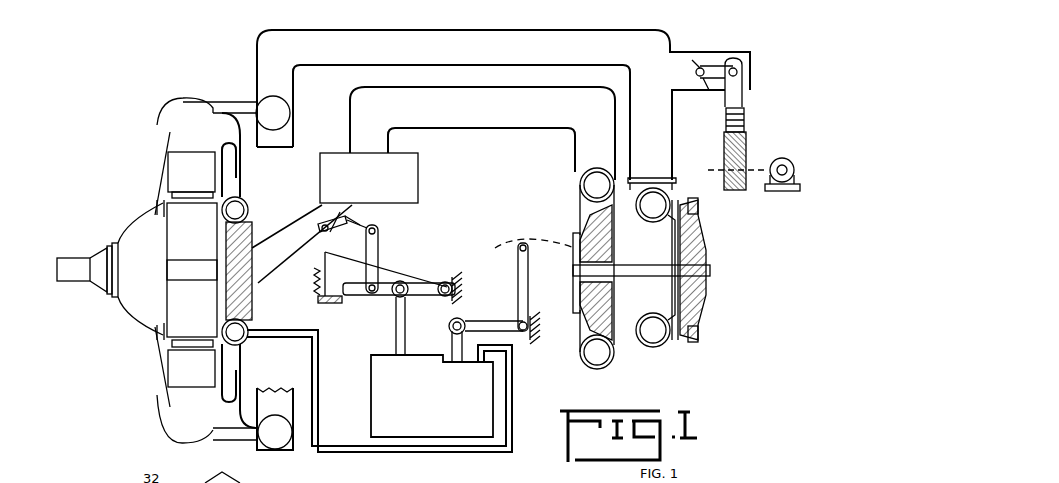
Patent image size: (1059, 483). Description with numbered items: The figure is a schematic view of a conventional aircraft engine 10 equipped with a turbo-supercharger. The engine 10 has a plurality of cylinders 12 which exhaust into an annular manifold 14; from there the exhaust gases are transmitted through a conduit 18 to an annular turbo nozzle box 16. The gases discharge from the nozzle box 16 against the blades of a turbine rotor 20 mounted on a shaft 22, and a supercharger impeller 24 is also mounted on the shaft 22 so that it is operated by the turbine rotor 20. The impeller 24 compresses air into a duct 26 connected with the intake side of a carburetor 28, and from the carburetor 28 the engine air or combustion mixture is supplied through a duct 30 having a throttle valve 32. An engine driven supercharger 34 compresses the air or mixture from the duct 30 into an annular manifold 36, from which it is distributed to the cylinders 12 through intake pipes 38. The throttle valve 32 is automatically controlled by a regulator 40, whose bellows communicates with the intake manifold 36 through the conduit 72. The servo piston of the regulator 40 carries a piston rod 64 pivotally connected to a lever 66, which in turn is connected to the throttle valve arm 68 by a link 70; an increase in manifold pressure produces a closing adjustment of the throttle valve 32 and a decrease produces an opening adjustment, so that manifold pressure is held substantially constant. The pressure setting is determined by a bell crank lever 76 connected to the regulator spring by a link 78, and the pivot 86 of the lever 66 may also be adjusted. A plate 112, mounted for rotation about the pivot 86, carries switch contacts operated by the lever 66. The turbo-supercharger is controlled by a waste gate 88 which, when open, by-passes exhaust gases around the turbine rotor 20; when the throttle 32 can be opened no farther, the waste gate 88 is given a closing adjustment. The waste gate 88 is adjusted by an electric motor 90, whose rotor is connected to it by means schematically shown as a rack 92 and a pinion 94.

The aircraft engine 10 is at (129, 319).
The cylinders 12 is at (178, 168).
The annular manifold 14 is at (283, 103).
The annular turbo nozzle box 16 is at (672, 190).
The conduit 18 is at (510, 30).
The turbine rotor 20 is at (700, 240).
The shaft 22 is at (577, 268).
The supercharger impeller 24 is at (575, 246).
The duct 26 is at (578, 147).
The carburetor 28 is at (333, 153).
The duct 30 is at (386, 218).
The throttle valve 32 is at (305, 220).
The engine driven supercharger 34 is at (253, 283).
The annular manifold 36 is at (248, 337).
The intake pipes 38 is at (241, 158).
The regulator 40 is at (380, 377).
The piston rod 64 is at (396, 328).
The lever 66 is at (388, 296).
The throttle valve arm 68 is at (364, 236).
The link 70 is at (380, 240).
The conduit 72 is at (512, 376).
The bell crank lever 76 is at (518, 290).
The link 78 is at (450, 340).
The pivot 86 is at (455, 280).
The waste gate 88 is at (702, 62).
The electric motor 90 is at (792, 160).
The rack 92 is at (725, 137).
The pinion 94 is at (732, 192).
The plate 112 is at (390, 272).